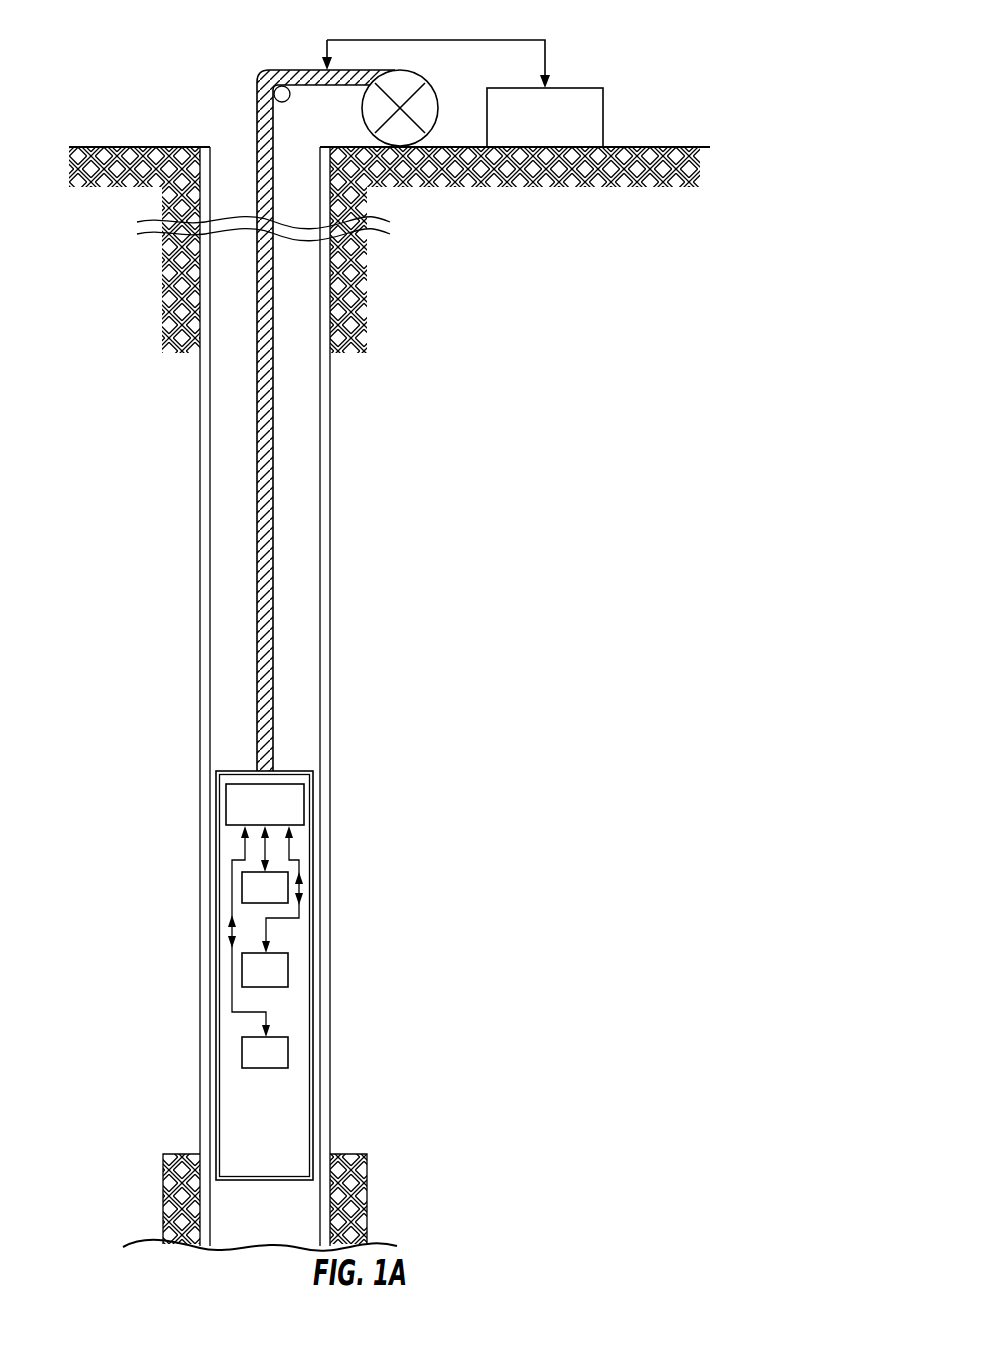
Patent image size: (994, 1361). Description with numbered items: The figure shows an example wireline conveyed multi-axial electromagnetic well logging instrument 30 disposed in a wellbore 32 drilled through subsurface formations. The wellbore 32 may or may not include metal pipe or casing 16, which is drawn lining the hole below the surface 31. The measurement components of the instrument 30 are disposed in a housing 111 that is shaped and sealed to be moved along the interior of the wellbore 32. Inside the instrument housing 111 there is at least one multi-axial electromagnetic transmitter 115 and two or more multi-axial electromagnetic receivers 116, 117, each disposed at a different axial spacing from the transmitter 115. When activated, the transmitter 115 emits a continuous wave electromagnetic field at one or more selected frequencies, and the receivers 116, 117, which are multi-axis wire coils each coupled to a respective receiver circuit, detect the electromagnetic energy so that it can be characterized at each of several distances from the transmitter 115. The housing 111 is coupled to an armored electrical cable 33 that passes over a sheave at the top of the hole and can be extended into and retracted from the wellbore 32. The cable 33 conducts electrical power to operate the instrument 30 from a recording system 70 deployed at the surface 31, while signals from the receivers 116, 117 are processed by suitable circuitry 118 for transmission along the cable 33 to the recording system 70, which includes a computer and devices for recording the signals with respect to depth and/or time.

The casing 16 is at (202, 635).
The multi-axial electromagnetic well logging instrument 30 is at (236, 758).
The surface 31 is at (122, 147).
The wellbore 32 is at (236, 160).
The armored electrical cable 33 is at (270, 82).
The recording system 70 is at (587, 102).
The instrument housing 111 is at (205, 1098).
The multi-axial electromagnetic transmitter 115 is at (282, 1052).
The multi-axial electromagnetic receiver 116 is at (281, 967).
The multi-axial electromagnetic receiver 117 is at (250, 892).
The circuitry 118 is at (282, 810).